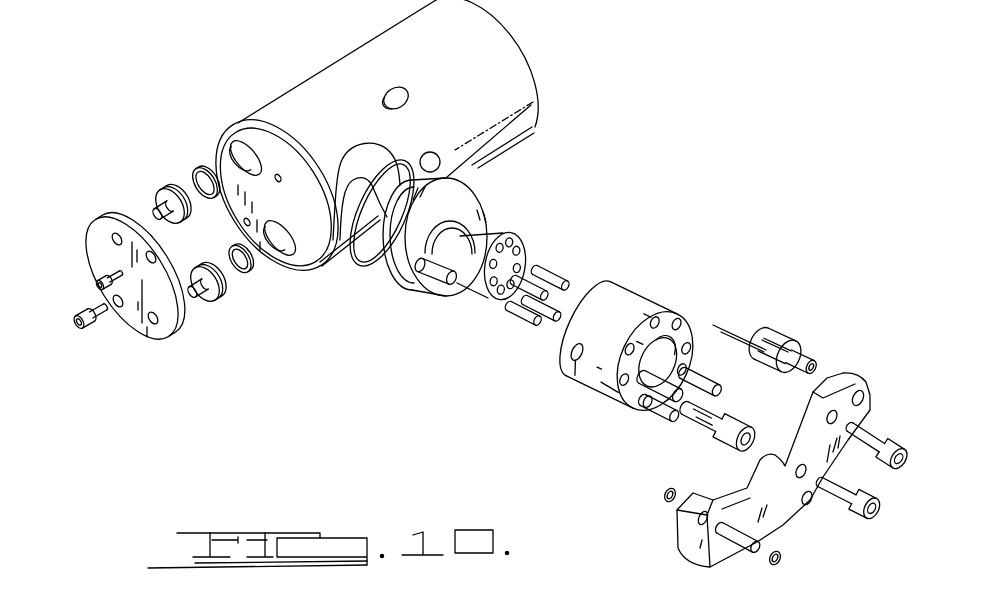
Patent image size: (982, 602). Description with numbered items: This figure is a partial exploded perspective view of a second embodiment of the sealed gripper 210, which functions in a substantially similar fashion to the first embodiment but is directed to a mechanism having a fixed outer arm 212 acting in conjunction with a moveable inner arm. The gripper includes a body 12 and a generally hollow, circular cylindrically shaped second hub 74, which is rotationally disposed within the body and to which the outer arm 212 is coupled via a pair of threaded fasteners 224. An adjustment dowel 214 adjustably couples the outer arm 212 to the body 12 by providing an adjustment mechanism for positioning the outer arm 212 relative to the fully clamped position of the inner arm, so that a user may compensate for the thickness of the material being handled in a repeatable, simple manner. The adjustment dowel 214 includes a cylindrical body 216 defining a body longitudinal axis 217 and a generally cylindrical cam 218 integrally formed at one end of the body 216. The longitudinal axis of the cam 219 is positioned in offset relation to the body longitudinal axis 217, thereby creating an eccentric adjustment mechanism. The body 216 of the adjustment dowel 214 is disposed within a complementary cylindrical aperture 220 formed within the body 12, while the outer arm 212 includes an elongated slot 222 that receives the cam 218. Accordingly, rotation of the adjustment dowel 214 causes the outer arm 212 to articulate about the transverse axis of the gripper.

The body 12 is at (344, 75).
The second hub 74 is at (596, 392).
The sealed gripper 210 is at (663, 168).
The outer arm 212 is at (742, 487).
The adjustment dowel 214 is at (798, 327).
The cylindrical body 216 is at (772, 366).
The body longitudinal axis 217 is at (728, 330).
The cam 218 is at (810, 357).
The cam longitudinal axis 219 is at (755, 332).
The cylindrical aperture 220 is at (440, 163).
The elongated slot 222 is at (863, 398).
The threaded fasteners 224 is at (884, 508).